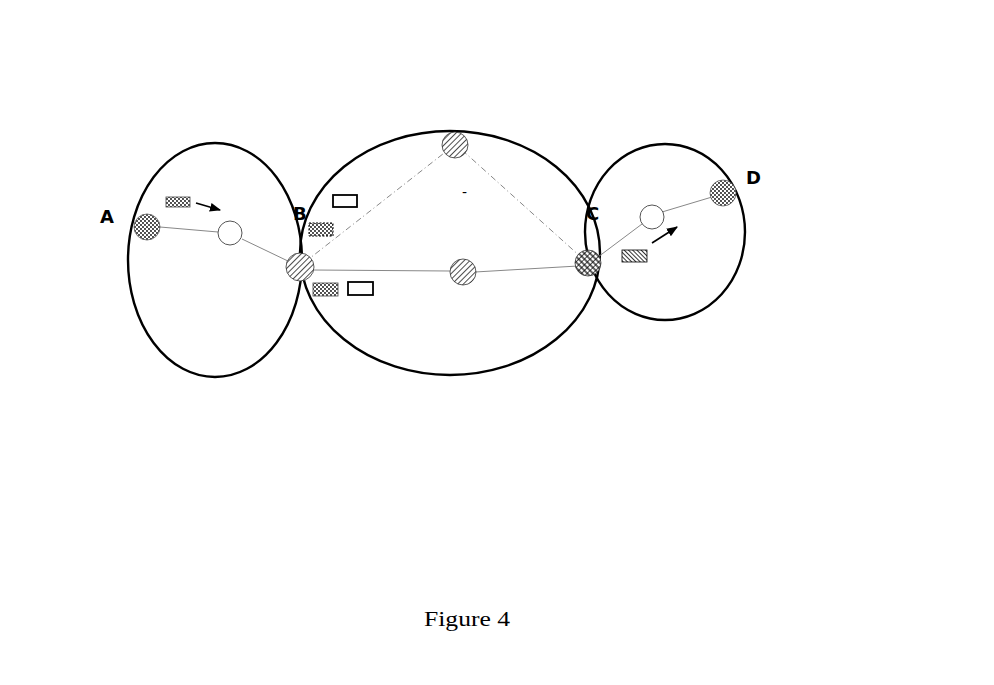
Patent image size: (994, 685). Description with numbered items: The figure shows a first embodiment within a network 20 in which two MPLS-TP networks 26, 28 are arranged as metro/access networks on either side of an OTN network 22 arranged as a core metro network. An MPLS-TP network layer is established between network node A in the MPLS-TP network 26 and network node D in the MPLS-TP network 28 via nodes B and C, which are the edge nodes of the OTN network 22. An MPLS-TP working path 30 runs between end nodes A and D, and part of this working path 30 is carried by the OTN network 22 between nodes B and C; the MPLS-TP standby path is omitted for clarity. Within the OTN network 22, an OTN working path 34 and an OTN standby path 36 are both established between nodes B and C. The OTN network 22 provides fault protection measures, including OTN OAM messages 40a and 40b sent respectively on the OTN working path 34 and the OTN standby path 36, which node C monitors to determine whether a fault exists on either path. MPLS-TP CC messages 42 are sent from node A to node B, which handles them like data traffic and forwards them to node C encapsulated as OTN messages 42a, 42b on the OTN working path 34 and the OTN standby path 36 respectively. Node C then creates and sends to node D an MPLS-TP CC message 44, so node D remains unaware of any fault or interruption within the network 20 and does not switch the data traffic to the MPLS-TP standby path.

The network 20 is at (801, 447).
The OTN network 22 is at (488, 130).
The MPLS-TP network 26 is at (190, 142).
The MPLS-TP network 28 is at (805, 45).
The MPLS-TP working path 30 is at (205, 218).
The OTN working path 34 is at (500, 272).
The OTN standby path 36 is at (532, 207).
The OTN OAM message 40a is at (360, 296).
The OTN OAM message 40b is at (348, 195).
The MPLS-TP CC message 42 is at (180, 196).
The encapsulated OTN message 42a is at (325, 296).
The encapsulated OTN message 42b is at (322, 222).
The MPLS-TP CC message 44 is at (635, 262).